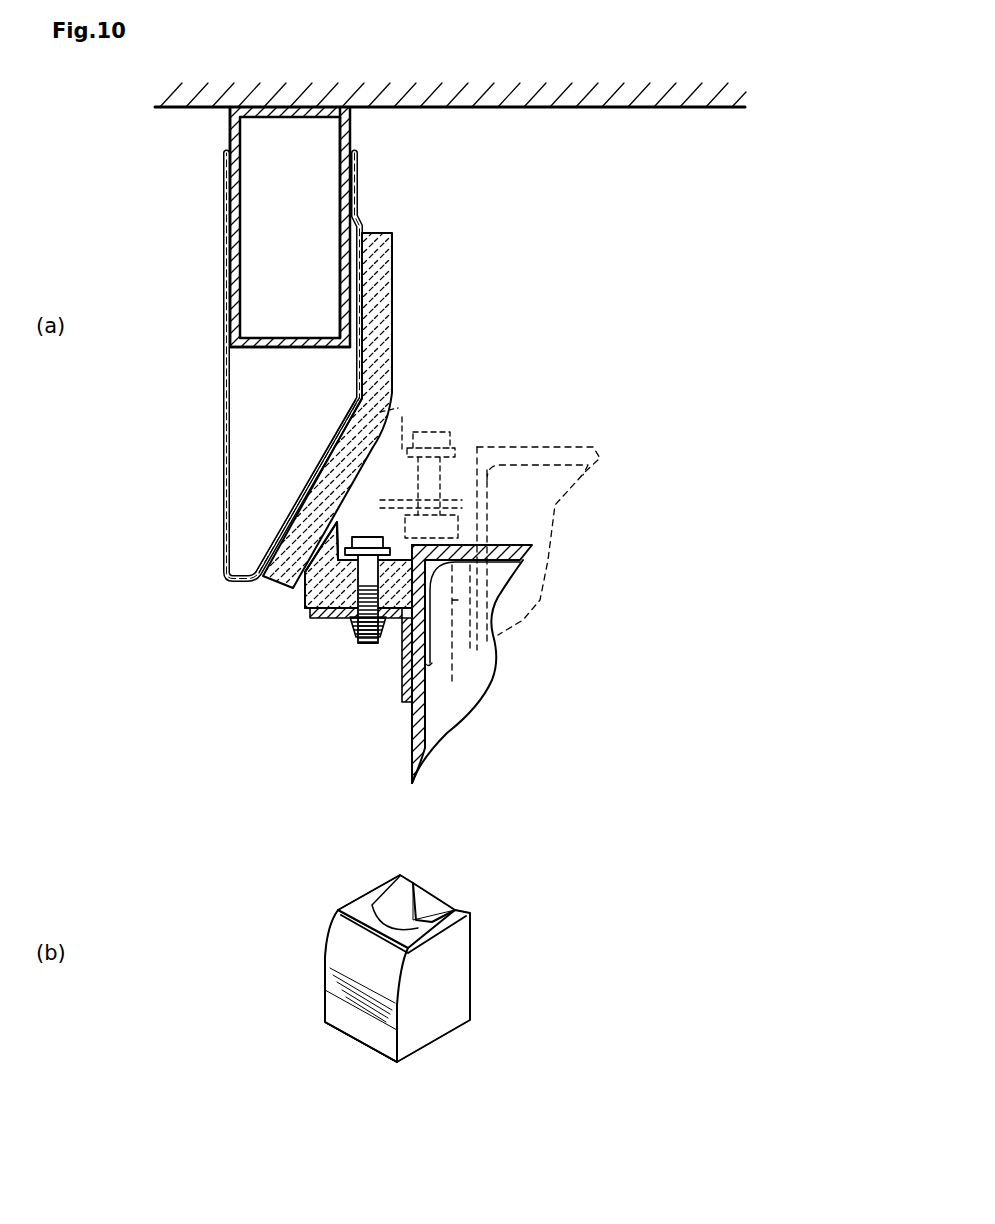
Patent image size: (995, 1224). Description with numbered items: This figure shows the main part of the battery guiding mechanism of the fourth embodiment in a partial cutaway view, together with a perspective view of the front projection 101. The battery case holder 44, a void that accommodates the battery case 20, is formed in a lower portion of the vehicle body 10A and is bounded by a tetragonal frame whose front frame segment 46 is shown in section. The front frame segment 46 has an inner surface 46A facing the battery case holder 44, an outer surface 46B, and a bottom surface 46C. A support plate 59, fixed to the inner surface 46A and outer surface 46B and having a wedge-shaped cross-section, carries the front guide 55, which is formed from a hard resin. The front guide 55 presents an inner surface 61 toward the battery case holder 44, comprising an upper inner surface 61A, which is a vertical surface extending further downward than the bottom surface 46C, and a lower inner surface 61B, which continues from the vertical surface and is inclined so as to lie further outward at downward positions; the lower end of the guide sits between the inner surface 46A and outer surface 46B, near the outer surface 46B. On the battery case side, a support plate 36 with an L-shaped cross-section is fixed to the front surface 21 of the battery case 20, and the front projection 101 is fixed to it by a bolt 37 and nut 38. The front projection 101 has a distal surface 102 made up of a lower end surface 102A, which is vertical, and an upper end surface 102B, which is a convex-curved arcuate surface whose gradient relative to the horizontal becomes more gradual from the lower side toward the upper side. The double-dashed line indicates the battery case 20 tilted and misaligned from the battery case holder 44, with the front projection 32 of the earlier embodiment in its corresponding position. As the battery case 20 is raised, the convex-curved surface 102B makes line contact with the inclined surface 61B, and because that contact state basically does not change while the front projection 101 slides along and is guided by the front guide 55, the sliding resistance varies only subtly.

The vehicle body 10A is at (710, 108).
The battery case holder 44 is at (546, 233).
The front frame segment 46 is at (228, 247).
The inner surface 46A is at (352, 130).
The outer surface 46B is at (228, 135).
The bottom surface 46C is at (253, 350).
The front guide 55 is at (396, 325).
The support plate 59 is at (222, 463).
The inner surface 61 is at (278, 375).
The upper inner surface 61A is at (395, 362).
The lower inner surface 61B is at (340, 495).
The front projection 32 is at (415, 408).
The battery case 20 is at (570, 445).
The distal surface 102 is at (150, 520).
The lower end surface 102A is at (303, 595).
The upper end surface 102B is at (307, 543).
The front projection 101 is at (300, 610).
The nut 38 is at (338, 622).
The bolt 37 is at (365, 640).
The support plate 36 is at (405, 665).
The front surface 21 is at (415, 746).